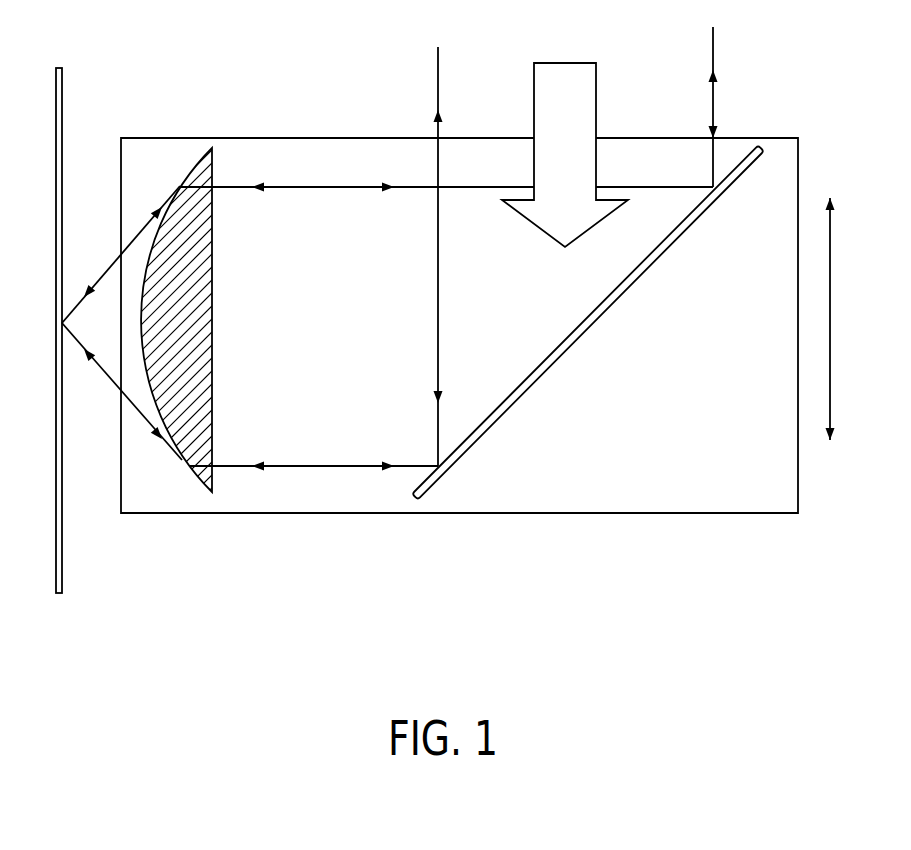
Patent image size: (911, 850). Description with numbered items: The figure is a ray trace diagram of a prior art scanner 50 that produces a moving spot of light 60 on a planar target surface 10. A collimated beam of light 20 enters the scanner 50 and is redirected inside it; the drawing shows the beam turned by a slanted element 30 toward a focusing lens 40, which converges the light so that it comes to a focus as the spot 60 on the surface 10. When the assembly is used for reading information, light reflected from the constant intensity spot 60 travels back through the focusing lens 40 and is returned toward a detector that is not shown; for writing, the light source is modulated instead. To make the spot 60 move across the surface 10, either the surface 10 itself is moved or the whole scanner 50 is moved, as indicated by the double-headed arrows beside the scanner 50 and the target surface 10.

The planar target surface 10 is at (63, 122).
The collimated beam of light 20 is at (578, 114).
The mirror 30 is at (675, 243).
The focusing lens 40 is at (213, 235).
The scanner 50 is at (342, 513).
The spot of light 60 is at (63, 326).